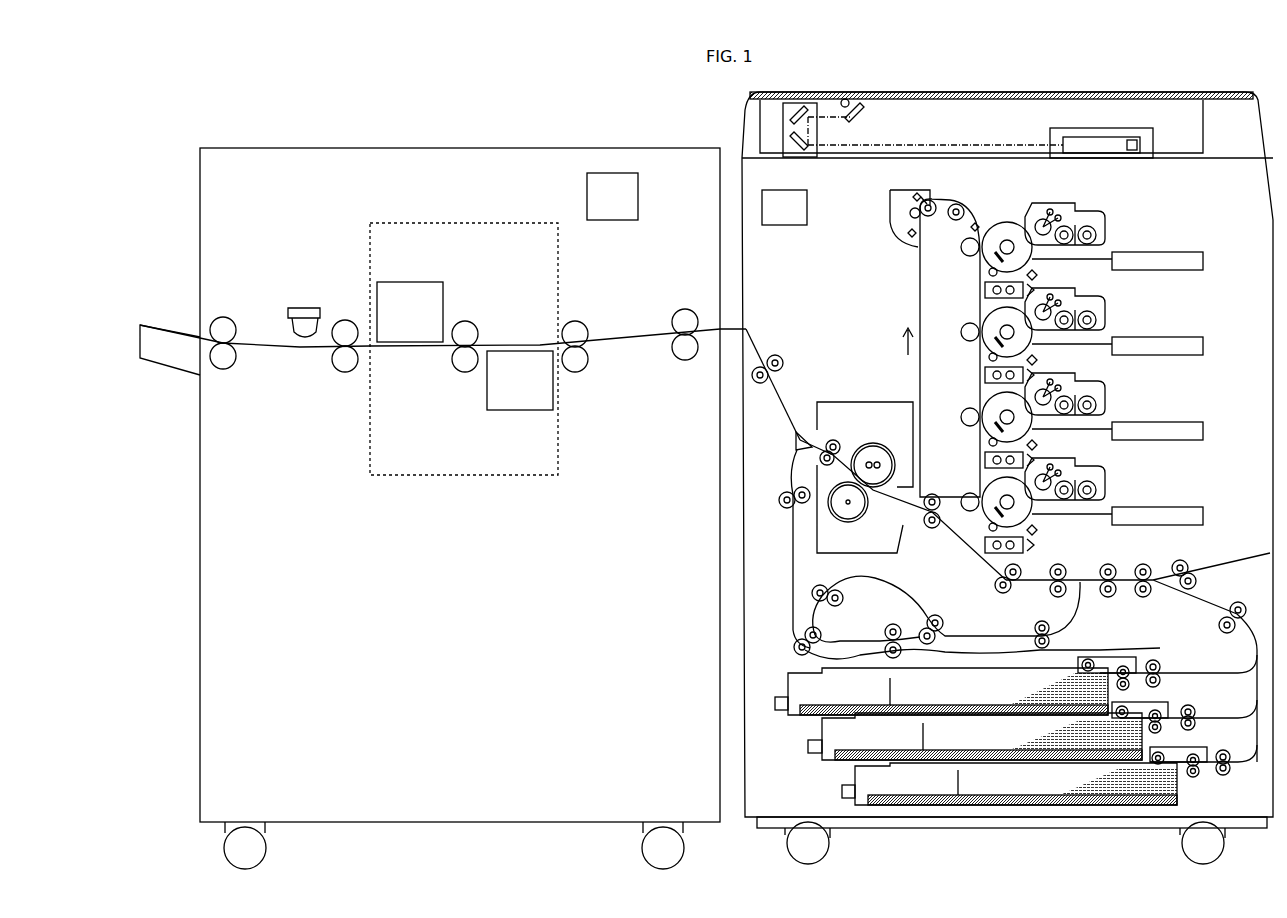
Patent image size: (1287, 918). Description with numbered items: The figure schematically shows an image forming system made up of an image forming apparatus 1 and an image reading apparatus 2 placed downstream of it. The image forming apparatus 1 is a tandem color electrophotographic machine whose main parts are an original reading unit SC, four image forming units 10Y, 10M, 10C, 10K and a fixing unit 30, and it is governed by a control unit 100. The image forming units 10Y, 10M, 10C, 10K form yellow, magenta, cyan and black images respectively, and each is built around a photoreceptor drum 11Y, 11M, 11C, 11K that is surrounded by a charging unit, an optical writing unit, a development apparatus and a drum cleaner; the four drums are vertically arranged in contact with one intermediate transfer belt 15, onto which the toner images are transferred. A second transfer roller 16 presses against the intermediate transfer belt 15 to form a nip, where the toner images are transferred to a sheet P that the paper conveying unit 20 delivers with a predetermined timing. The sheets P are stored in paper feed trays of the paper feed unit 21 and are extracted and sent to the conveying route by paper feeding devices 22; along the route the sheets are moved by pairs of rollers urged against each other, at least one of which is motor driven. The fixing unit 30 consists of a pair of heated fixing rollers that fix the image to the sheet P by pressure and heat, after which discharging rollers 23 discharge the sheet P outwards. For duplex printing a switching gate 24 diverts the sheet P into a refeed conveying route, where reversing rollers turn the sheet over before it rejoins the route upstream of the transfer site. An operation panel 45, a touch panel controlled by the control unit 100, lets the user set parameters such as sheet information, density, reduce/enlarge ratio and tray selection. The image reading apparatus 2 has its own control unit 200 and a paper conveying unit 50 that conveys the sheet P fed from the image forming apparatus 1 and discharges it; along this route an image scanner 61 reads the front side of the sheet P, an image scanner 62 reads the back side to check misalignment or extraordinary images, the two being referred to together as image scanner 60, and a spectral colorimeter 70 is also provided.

The image forming apparatus 1 is at (1212, 90).
The image reading apparatus 2 is at (497, 148).
The image forming unit 10Y is at (1118, 214).
The image forming unit 10M is at (1118, 302).
The image forming unit 10C is at (1118, 392).
The image forming unit 10K is at (1118, 477).
The photoreceptor drum 11Y is at (1001, 222).
The photoreceptor drum 11M is at (985, 320).
The photoreceptor drum 11C is at (985, 405).
The photoreceptor drum 11K is at (985, 490).
The intermediate transfer belt 15 is at (918, 267).
The second transfer roller 16 is at (932, 530).
The paper conveying unit 20 is at (786, 663).
The paper feed unit 21 is at (807, 735).
The paper feeding device 22 is at (1140, 660).
The discharging rollers 23 is at (768, 360).
The switching gate 24 is at (805, 437).
The fixing unit 30 is at (868, 402).
The operation panel 45 is at (1178, 150).
The paper conveying unit 50 is at (618, 328).
The image scanner 60 is at (472, 476).
The image scanner 61 is at (415, 282).
The image scanner 62 is at (525, 410).
The spectral colorimeter 70 is at (318, 310).
The control unit 100 is at (807, 215).
The control unit 200 is at (638, 207).
The original reading unit SC is at (966, 124).
The sheet P is at (1052, 667).